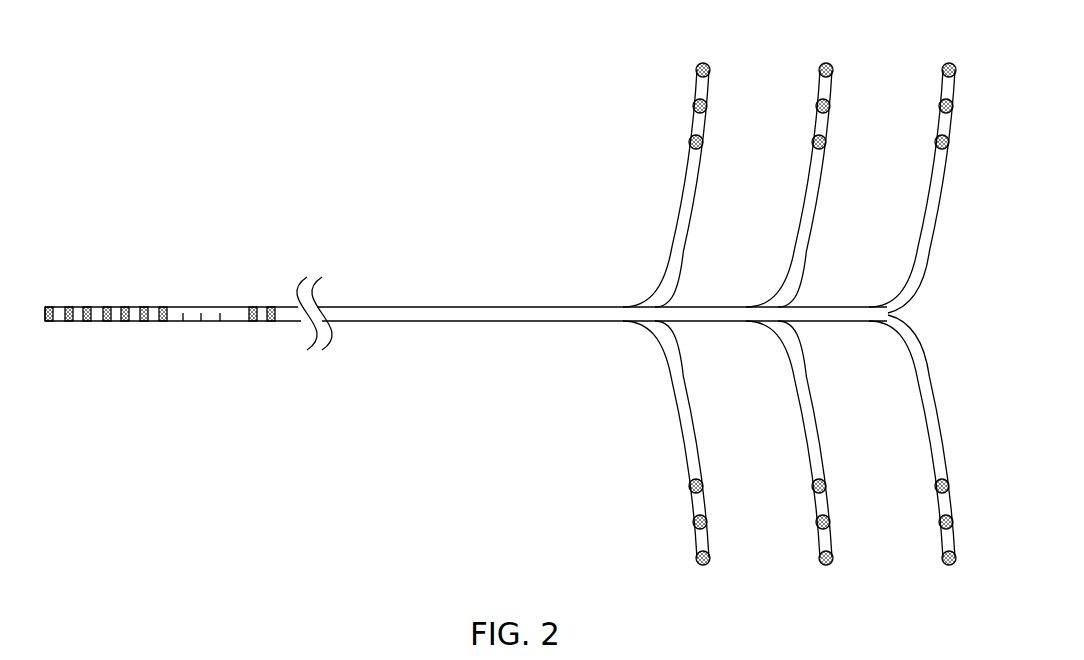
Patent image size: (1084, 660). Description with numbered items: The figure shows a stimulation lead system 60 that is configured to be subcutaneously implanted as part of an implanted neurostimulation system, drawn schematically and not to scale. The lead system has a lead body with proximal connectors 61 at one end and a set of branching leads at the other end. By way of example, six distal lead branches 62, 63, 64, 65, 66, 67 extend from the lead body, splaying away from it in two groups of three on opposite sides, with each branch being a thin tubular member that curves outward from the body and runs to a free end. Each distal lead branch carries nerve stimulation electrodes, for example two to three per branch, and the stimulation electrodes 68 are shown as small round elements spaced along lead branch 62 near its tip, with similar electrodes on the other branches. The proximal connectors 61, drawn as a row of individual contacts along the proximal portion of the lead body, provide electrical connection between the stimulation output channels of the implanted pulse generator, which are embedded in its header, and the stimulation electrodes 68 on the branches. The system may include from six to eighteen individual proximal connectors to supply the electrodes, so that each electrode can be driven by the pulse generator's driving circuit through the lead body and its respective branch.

The stimulation lead system 60 is at (128, 93).
The proximal connectors 61 is at (205, 305).
The distal lead branch 62 is at (700, 63).
The distal lead branch 63 is at (823, 62).
The distal lead branch 64 is at (946, 62).
The distal lead branch 65 is at (944, 567).
The distal lead branch 66 is at (821, 567).
The distal lead branch 67 is at (698, 567).
The stimulation electrodes 68 is at (691, 139).